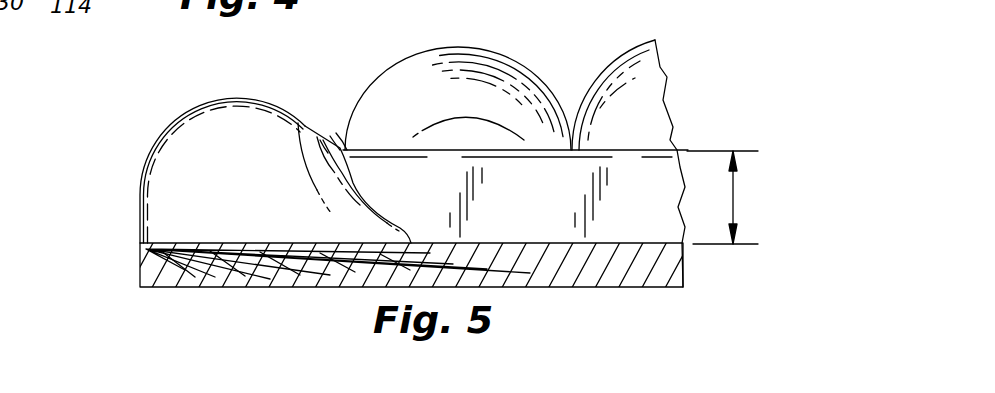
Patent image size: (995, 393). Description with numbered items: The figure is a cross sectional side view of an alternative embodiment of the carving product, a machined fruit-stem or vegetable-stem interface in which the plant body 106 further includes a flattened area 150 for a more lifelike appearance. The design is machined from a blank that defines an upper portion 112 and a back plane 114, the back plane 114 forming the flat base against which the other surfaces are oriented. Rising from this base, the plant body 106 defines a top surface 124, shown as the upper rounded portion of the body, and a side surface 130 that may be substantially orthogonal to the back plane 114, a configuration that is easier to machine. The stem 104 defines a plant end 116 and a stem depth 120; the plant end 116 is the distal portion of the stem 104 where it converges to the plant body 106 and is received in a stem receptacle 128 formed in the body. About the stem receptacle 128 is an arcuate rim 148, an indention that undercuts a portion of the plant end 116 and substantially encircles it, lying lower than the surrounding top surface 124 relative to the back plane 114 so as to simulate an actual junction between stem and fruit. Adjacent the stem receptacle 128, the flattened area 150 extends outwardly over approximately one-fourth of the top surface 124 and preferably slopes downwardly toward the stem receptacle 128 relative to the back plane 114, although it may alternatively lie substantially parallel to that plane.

The stem 104 is at (583, 172).
The plant body 106 is at (222, 125).
The upper portion 112 is at (502, 66).
The back plane 114 is at (193, 288).
The plant end 116 is at (404, 175).
The stem depth 120 is at (735, 192).
The top surface 124 is at (195, 142).
The stem receptacle 128 is at (345, 148).
The side surface 130 is at (170, 208).
The arcuate rim 148 is at (302, 127).
The flattened area 150 is at (283, 113).